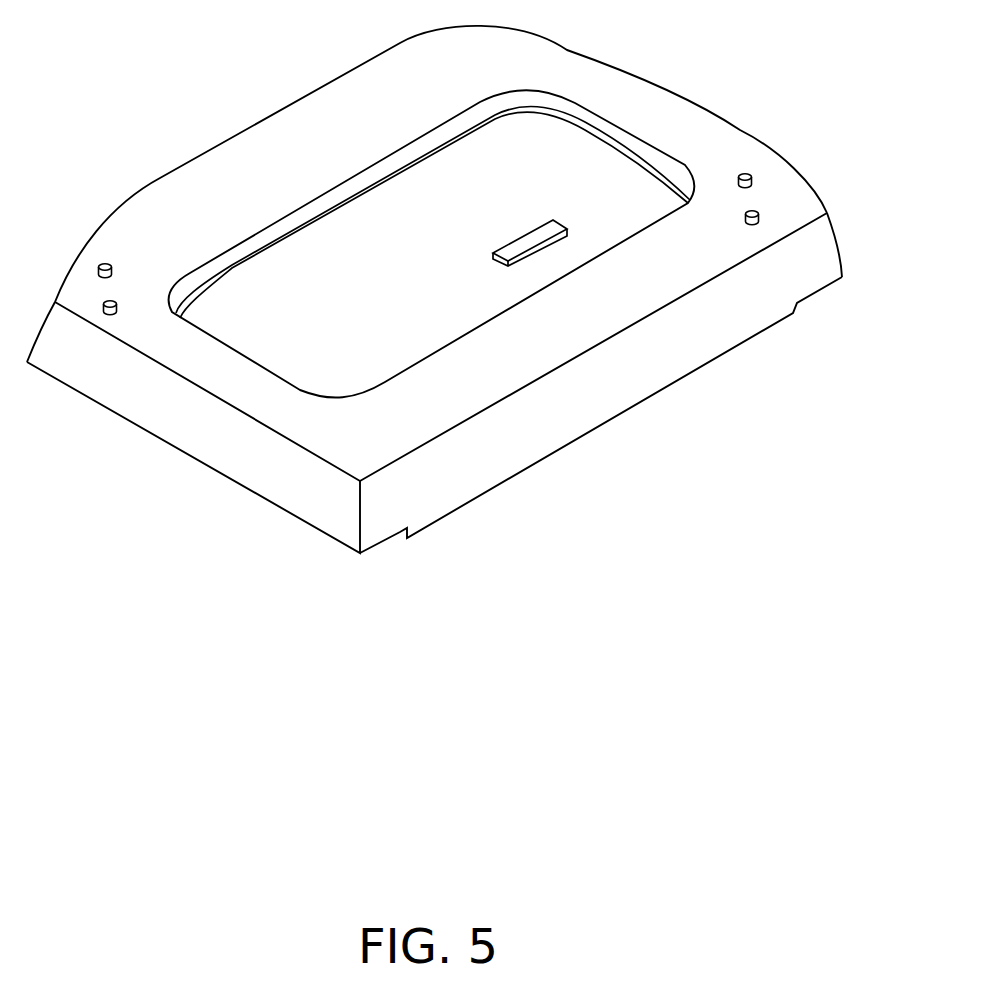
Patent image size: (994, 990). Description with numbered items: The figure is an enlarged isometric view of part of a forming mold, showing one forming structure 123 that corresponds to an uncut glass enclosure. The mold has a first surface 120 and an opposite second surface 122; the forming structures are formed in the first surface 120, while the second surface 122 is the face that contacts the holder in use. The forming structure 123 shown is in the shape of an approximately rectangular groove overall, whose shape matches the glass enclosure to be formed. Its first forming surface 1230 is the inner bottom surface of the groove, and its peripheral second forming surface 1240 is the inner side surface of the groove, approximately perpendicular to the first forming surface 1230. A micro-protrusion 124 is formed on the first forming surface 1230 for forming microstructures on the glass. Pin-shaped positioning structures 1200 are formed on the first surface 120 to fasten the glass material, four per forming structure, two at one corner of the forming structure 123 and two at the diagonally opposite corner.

The first surface 120 is at (163, 230).
The second surface 122 is at (587, 437).
The forming structure 123 is at (565, 160).
The first forming surface 1230 is at (415, 188).
The second forming surface 1240 is at (627, 138).
The positioning structures 1200 is at (745, 174).
The micro-protrusions 124 is at (533, 240).